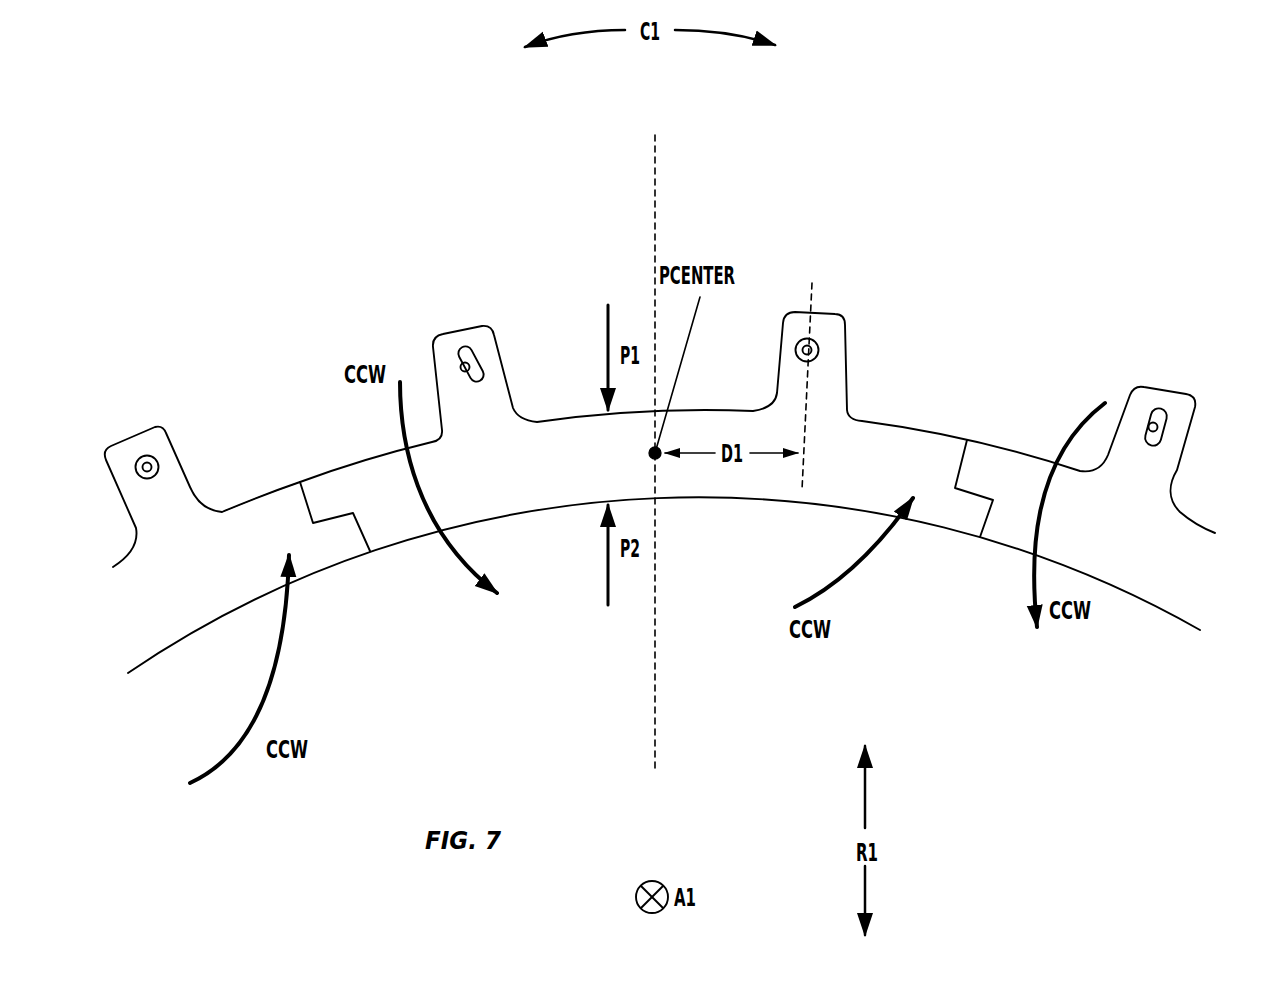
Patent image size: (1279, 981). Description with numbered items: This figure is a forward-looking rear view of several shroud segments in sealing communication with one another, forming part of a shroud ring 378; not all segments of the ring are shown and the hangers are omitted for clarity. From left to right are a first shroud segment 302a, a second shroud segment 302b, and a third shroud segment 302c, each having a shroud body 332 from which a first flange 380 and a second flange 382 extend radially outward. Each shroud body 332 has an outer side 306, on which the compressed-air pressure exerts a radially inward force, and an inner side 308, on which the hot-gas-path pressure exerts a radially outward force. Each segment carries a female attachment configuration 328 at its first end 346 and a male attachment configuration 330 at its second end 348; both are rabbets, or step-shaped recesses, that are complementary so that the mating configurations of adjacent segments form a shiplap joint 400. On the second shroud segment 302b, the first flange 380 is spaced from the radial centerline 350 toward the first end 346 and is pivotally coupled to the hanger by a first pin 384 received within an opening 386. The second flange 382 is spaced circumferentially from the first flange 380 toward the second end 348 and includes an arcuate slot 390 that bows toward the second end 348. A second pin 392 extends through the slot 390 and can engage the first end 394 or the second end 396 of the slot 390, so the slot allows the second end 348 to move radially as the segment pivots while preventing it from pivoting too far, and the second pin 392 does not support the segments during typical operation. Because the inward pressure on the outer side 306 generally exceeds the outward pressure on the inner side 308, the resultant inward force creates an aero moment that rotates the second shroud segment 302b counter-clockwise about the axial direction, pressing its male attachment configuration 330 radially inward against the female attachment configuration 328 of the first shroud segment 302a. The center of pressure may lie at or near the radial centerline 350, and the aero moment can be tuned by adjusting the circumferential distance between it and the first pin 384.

The shroud ring 378 is at (670, 442).
The radial centerline 350 is at (660, 190).
The shroud body 332 is at (198, 580).
The inner side 308 is at (146, 672).
The outer side 306 is at (226, 505).
The female attachment configuration 328 is at (352, 553).
The shiplap joint 400 is at (300, 522).
The male attachment configuration 330 is at (337, 488).
The second end 348 is at (398, 555).
The first end 346 is at (928, 533).
The first shroud segment 302a is at (175, 620).
The second shroud segment 302b is at (710, 485).
The third shroud segment 302c is at (1155, 607).
The first flange 380 is at (150, 428).
The first pin 384 is at (160, 463).
The opening 386 is at (135, 455).
The second flange 382 is at (490, 328).
The first end of slot 394 is at (466, 340).
The second pin 392 is at (468, 368).
The second end of slot 396 is at (480, 385).
The slot 390 is at (432, 352).